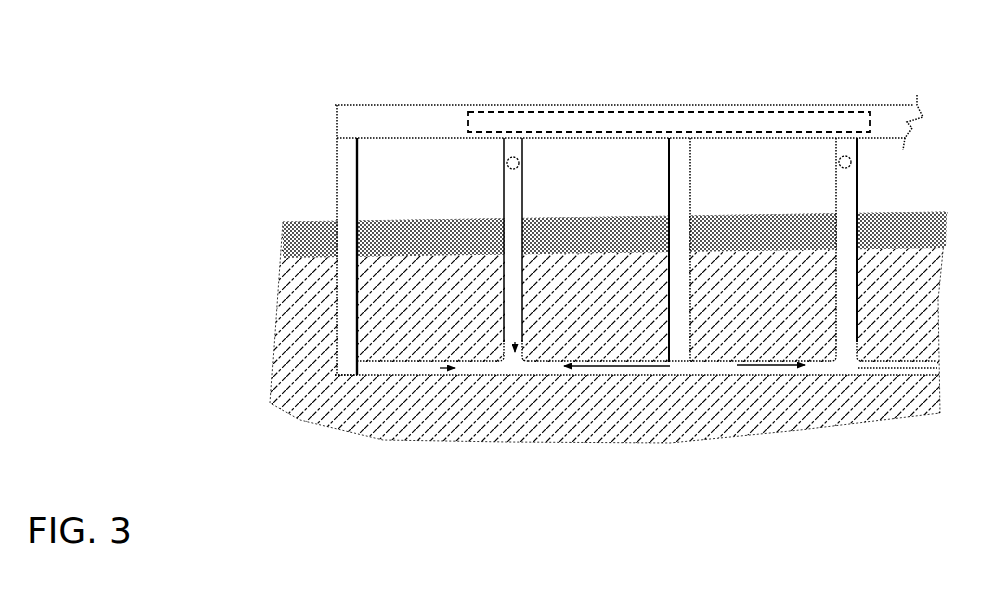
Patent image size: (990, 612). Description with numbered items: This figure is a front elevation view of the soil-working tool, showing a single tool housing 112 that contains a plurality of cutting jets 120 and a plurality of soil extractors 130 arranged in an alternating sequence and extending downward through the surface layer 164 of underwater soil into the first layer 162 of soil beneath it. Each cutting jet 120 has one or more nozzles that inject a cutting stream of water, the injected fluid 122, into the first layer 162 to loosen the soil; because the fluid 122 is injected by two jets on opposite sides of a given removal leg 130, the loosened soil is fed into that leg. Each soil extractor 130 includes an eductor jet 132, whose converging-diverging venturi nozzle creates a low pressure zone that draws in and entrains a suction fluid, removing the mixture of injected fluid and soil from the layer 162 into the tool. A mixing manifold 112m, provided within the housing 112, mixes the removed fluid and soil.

The housing 112 is at (553, 97).
The mixing manifold 112m is at (695, 100).
The cutting jet 120 is at (342, 190).
The injected fluid 122 is at (740, 372).
The soil extractor 130 is at (539, 306).
The eductor jet 132 is at (508, 162).
The first layer of soil 162 is at (280, 409).
The surface layer 164 is at (273, 242).